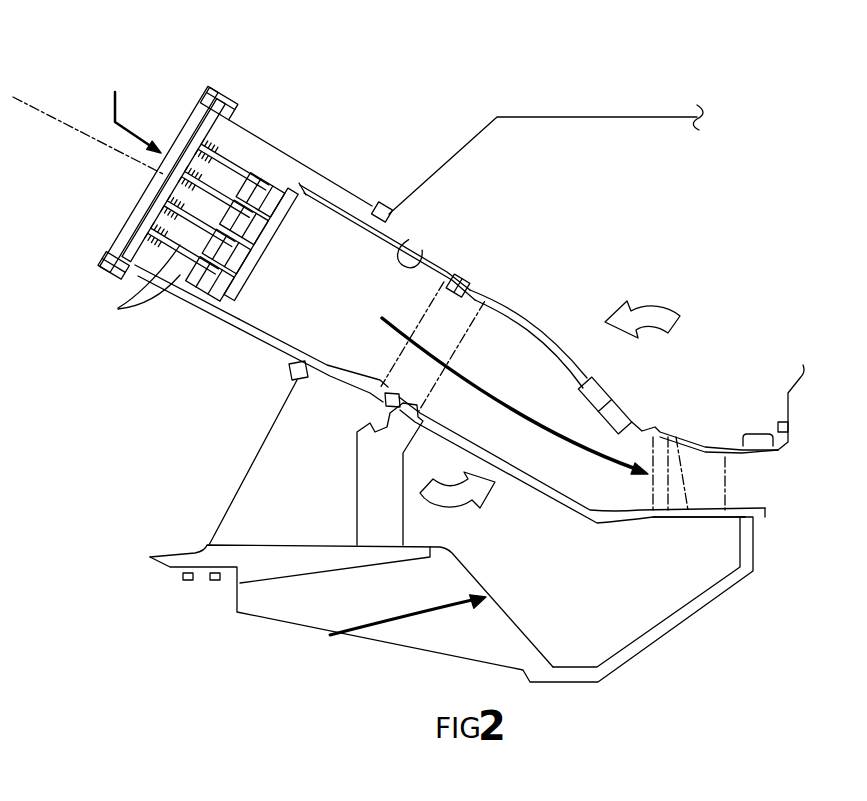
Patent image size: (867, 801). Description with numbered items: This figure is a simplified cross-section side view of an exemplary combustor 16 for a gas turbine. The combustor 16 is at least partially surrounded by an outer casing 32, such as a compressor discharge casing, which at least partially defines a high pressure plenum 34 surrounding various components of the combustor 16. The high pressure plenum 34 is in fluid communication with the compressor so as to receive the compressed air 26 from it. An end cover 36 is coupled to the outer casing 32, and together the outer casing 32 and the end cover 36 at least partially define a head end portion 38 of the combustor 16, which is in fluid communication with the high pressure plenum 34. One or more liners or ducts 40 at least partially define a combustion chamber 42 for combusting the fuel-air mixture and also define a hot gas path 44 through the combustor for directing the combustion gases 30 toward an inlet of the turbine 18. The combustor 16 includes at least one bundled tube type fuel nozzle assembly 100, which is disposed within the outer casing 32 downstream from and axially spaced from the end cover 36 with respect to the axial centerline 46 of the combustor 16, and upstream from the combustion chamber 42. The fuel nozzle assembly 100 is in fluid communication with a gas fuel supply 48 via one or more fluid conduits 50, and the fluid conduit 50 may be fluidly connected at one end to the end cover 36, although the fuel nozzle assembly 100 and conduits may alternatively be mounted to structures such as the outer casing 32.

The combustor 16 is at (528, 70).
The turbine 18 is at (760, 487).
The compressed air 26 is at (653, 301).
The combustion gases 30 is at (500, 407).
The outer casing 32 is at (446, 163).
The high pressure plenum 34 is at (665, 217).
The end cover 36 is at (125, 229).
The head end portion 38 is at (186, 293).
The liner 40 is at (423, 258).
The combustion chamber 42 is at (329, 287).
The hot gas path 44 is at (500, 357).
The axial centerline 46 is at (32, 108).
The gas fuel supply 48 is at (126, 82).
The fluid conduit 50 is at (112, 297).
The bundled tube type fuel nozzle assembly 100 is at (208, 252).